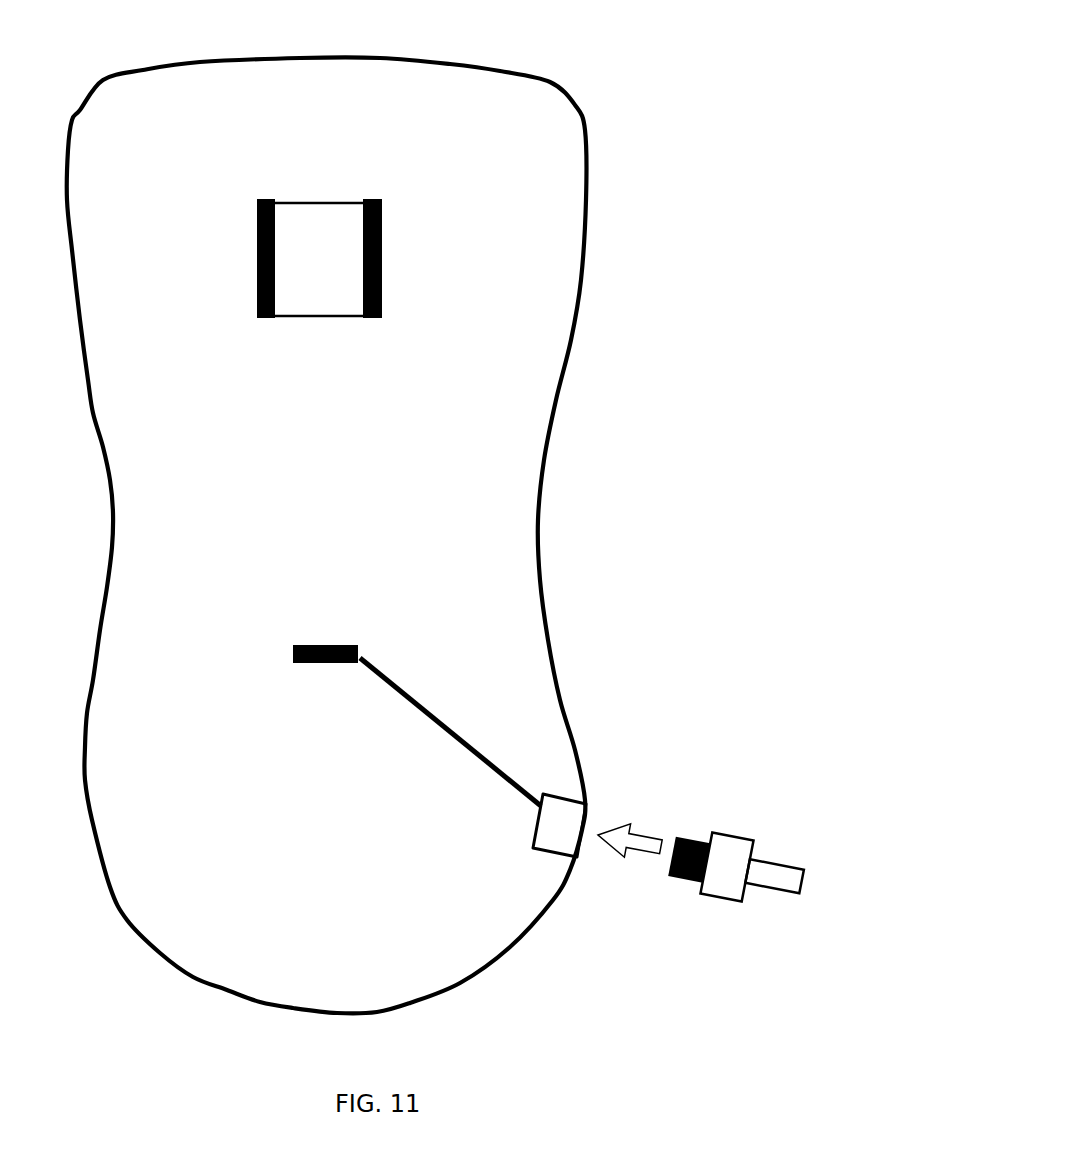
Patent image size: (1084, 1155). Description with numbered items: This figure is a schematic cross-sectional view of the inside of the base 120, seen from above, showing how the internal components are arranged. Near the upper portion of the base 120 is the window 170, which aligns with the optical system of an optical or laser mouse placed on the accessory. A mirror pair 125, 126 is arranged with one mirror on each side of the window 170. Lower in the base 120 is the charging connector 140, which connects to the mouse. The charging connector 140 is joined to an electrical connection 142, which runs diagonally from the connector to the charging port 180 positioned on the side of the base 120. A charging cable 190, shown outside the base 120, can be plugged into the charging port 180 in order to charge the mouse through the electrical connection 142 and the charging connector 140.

The base 120 is at (596, 116).
The window 170 is at (319, 235).
The mirror 125 is at (267, 327).
The mirror 126 is at (375, 330).
The charging connector 140 is at (306, 674).
The electrical connection 142 is at (423, 727).
The charging port 180 is at (517, 851).
The charging cable 190 is at (737, 824).